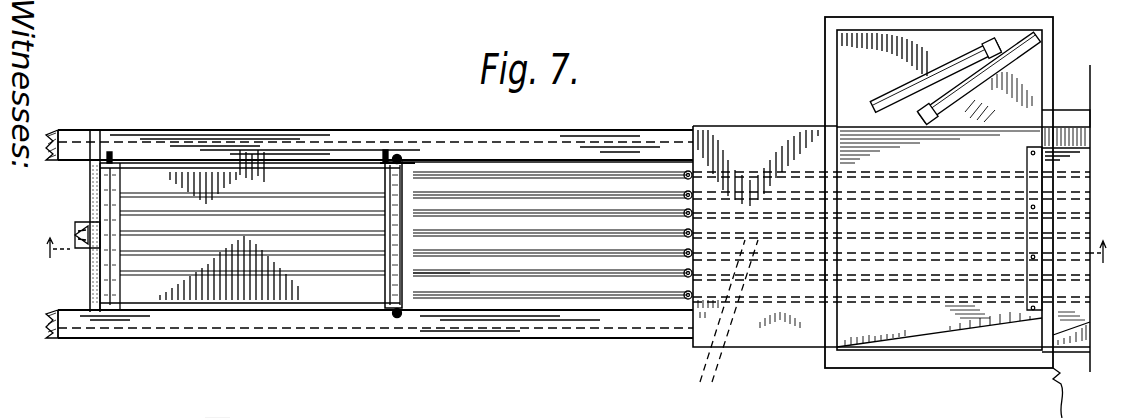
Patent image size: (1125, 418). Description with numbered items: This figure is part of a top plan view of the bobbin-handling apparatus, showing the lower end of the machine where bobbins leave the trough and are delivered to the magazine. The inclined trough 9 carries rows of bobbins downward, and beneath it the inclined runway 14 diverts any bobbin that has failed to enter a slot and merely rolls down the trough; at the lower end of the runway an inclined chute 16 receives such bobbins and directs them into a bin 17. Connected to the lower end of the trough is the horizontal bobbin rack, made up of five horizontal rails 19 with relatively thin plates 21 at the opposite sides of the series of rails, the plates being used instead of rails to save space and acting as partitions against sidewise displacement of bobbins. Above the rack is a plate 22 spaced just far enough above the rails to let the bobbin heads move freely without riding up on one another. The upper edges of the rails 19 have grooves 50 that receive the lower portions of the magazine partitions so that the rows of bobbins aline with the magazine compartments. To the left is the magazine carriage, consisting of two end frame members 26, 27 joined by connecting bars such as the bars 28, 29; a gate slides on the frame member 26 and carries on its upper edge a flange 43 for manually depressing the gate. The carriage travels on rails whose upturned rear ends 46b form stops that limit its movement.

The upturned rear end of rail 46b is at (47, 148).
The end frame member 27 is at (100, 182).
The connecting bar 28 is at (258, 162).
The connecting bar 29 is at (270, 307).
The end frame member 26 is at (382, 178).
The horizontal rail 19 is at (435, 188).
The thin plate 21 is at (565, 175).
The groove 50 is at (443, 277).
The plate 22 is at (762, 126).
The bin 17 is at (825, 66).
The inclined chute 16 is at (912, 267).
The inclined runway 14 is at (1075, 320).
The inclined trough 9 is at (573, 243).
The flange 43 is at (201, 417).